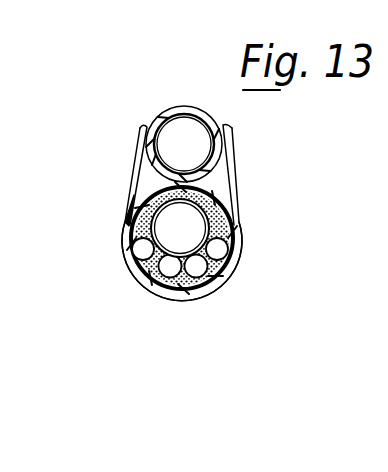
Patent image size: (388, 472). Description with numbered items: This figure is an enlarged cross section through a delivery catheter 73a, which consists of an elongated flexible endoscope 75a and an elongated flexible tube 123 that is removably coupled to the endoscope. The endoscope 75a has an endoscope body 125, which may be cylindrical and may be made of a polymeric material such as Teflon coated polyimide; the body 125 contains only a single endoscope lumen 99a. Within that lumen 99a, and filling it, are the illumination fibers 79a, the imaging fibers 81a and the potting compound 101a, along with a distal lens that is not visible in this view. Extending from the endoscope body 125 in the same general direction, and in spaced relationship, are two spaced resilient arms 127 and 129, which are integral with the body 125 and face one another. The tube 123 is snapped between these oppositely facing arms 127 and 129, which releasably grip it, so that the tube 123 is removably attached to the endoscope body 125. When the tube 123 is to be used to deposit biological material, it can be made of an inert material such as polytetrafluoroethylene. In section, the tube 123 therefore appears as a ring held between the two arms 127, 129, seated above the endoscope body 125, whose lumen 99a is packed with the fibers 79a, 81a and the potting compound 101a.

The delivery catheter 73a is at (181, 97).
The elongated flexible tube 123 is at (172, 108).
The resilient arm 127 is at (130, 163).
The resilient arm 129 is at (238, 177).
The imaging fibers 81a is at (195, 227).
The elongated flexible endoscope 75a is at (240, 262).
The endoscope body 125 is at (222, 281).
The illumination fibers 79a is at (144, 256).
The endoscope lumen 99a is at (164, 287).
The potting compound 101a is at (189, 282).